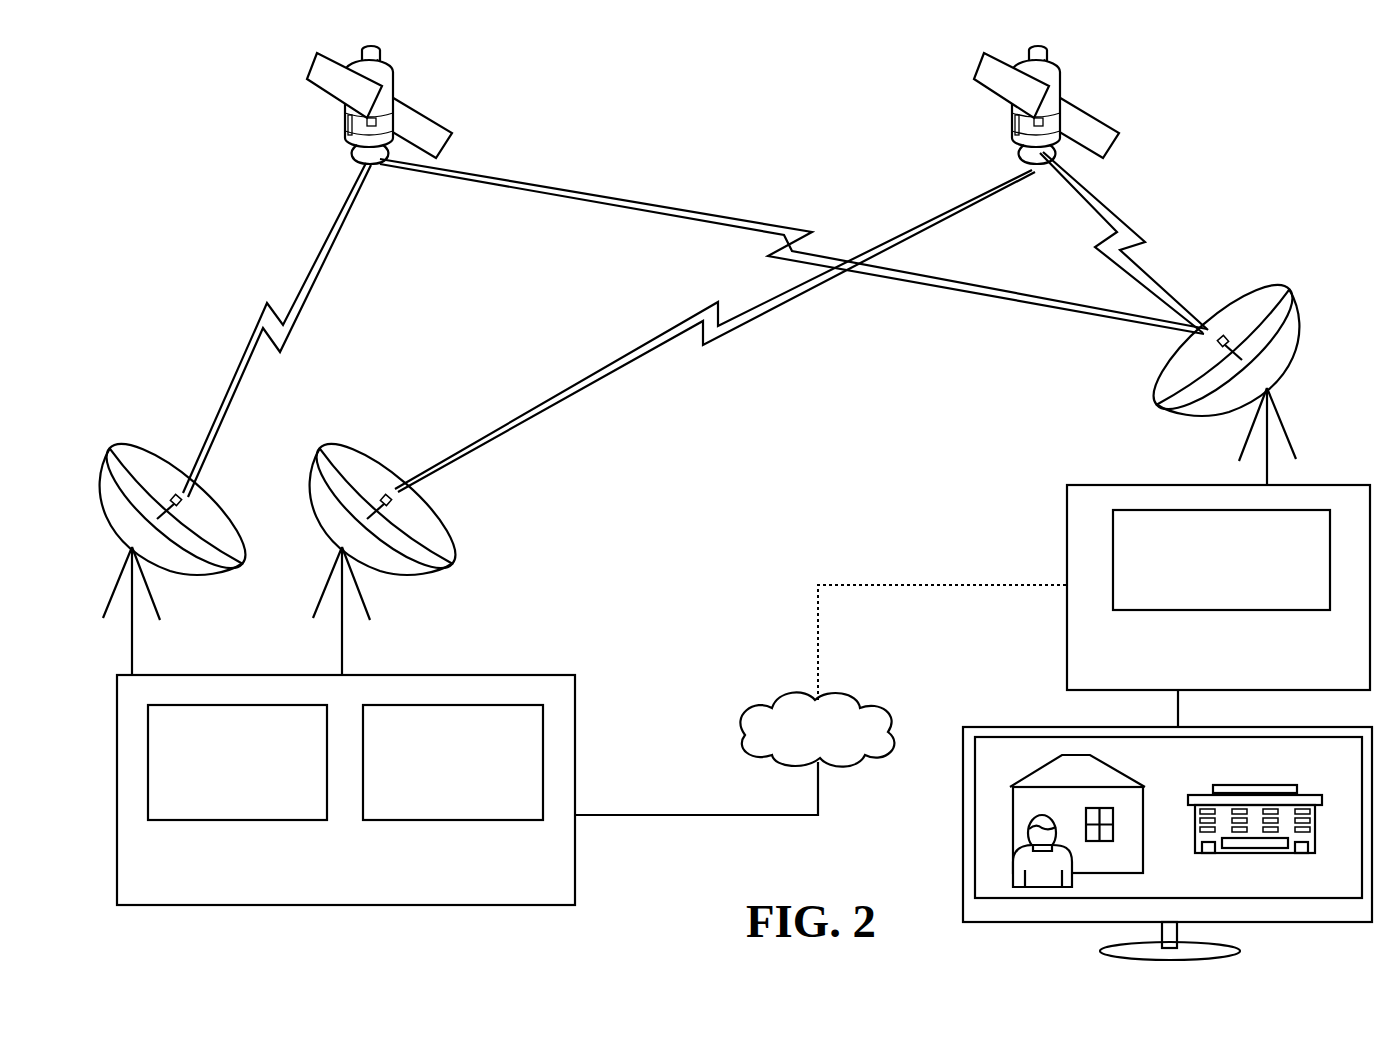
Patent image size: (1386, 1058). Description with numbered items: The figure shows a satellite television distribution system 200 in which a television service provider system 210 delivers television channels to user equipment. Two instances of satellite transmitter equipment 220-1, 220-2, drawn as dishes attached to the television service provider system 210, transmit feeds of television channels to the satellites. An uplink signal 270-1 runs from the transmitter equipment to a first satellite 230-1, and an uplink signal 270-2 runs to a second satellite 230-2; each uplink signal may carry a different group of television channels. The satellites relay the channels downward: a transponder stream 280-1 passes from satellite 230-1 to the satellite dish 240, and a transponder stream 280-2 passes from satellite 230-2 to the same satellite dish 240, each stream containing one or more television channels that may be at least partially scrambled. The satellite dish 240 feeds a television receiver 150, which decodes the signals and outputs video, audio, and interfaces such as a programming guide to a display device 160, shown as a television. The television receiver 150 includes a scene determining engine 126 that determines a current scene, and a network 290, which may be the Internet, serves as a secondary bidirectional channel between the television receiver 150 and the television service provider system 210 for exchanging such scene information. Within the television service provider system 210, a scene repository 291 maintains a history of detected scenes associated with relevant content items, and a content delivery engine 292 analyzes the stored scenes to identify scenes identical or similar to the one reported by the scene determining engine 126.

The satellite television distribution system 200 is at (194, 132).
The satellite 230-1 is at (450, 128).
The satellite 230-2 is at (1113, 123).
The satellite transmitter equipment 220-1 is at (152, 450).
The satellite transmitter equipment 220-2 is at (362, 432).
The satellite dish 240 is at (1270, 288).
The uplink signal 270-1 is at (313, 258).
The uplink signal 270-2 is at (928, 213).
The transponder stream 280-1 is at (583, 190).
The transponder stream 280-2 is at (1140, 230).
The television service provider system 210 is at (467, 762).
The scene repository 291 is at (237, 762).
The content delivery engine 292 is at (453, 762).
The network 290 is at (745, 708).
The television receiver 150 is at (1218, 581).
The scene determining engine 126 is at (1221, 560).
The display device 160 is at (985, 727).